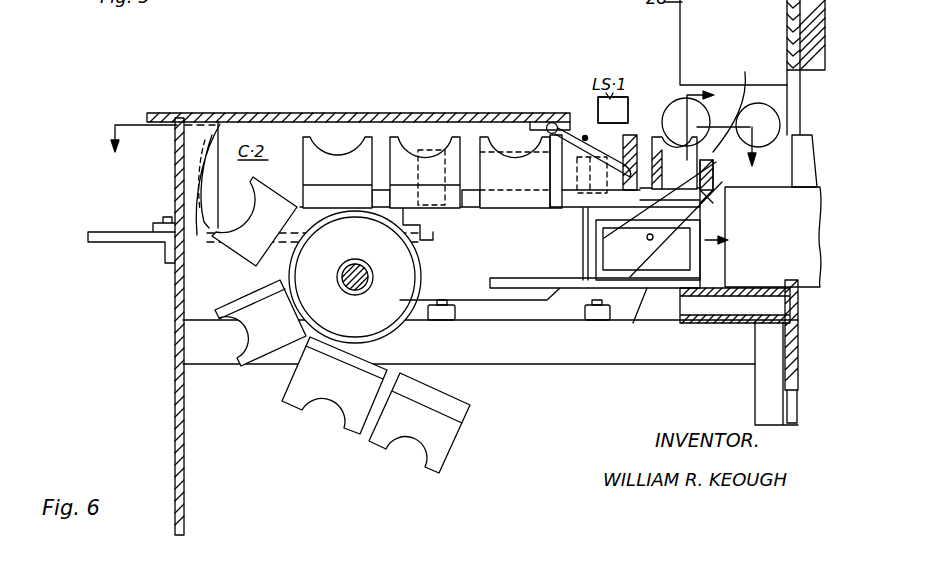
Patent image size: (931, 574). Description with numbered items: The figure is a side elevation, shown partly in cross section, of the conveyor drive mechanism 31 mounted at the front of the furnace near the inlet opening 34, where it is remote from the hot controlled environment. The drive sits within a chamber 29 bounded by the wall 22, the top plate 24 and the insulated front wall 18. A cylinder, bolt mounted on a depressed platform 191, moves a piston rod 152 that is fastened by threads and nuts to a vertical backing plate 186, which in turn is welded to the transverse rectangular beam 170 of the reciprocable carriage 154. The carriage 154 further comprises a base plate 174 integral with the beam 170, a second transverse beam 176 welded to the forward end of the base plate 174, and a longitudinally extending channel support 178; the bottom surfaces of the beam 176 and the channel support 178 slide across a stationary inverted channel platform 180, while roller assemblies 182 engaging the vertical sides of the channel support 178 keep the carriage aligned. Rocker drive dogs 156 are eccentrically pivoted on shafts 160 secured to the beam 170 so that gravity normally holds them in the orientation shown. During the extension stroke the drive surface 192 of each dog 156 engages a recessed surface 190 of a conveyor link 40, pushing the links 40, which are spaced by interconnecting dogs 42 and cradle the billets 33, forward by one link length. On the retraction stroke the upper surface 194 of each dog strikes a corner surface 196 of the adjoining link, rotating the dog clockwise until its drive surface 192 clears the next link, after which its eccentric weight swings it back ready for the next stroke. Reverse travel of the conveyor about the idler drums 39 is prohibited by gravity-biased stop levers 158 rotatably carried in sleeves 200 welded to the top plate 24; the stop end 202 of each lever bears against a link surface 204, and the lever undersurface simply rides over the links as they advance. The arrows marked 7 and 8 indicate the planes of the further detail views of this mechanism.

The section line 7- 7 is at (714, 173).
The section line 8- 8 is at (437, 153).
The front wall 18 is at (789, 15).
The wall 22 is at (175, 195).
The top plate 24 is at (385, 113).
The chamber 29 is at (190, 455).
The conveyor drive mechanism 31 is at (317, 88).
The billet 33 is at (781, 120).
The inlet opening 34 is at (683, 92).
The return drum 39 is at (402, 268).
The link 40 is at (350, 175).
The interconnecting dog 42 is at (300, 211).
The piston rod 152 is at (480, 176).
The reciprocable carriage 154 is at (715, 262).
The rocker drive dog 156 is at (690, 192).
The stop lever 158 is at (565, 125).
The shaft 160 is at (647, 240).
The transverse rectangular beam 170 is at (697, 268).
The base plate 174 is at (505, 278).
The transverse beam 176 is at (680, 318).
The channel support 178 is at (522, 323).
The inverted channel platform 180 is at (502, 367).
The roller assembly 182 is at (442, 322).
The vertical backing plate 186 is at (583, 265).
The recessed link surface 190 is at (711, 103).
The depressed platform 191 is at (206, 245).
The drive surface 192 is at (733, 178).
The upper dog surface 194 is at (668, 190).
The corner link surface 196 is at (660, 186).
The sleeve 200 is at (538, 125).
The stop end 202 is at (626, 140).
The link surface 204 is at (632, 148).